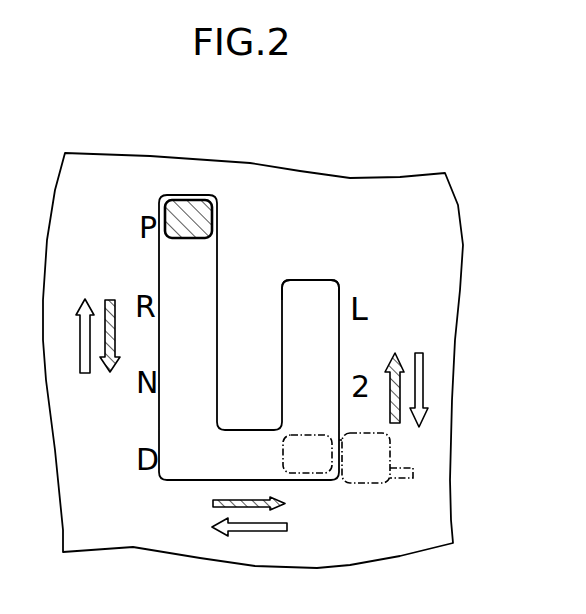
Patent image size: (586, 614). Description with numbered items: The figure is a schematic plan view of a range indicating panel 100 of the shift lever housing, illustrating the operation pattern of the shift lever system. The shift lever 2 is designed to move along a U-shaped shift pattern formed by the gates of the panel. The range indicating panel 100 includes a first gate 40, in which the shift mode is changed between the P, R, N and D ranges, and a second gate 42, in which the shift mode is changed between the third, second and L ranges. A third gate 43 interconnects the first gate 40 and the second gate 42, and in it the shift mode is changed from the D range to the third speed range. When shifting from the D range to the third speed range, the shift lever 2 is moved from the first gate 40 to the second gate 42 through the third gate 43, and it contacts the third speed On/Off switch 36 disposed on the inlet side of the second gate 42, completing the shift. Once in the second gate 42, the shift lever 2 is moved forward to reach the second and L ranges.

The shift lever 2 is at (217, 208).
The first gate 40 is at (213, 304).
The second gate 42 is at (322, 292).
The third gate 43 is at (220, 480).
The third speed On/Off switch 36 is at (368, 483).
The range indicating panel 100 is at (140, 542).